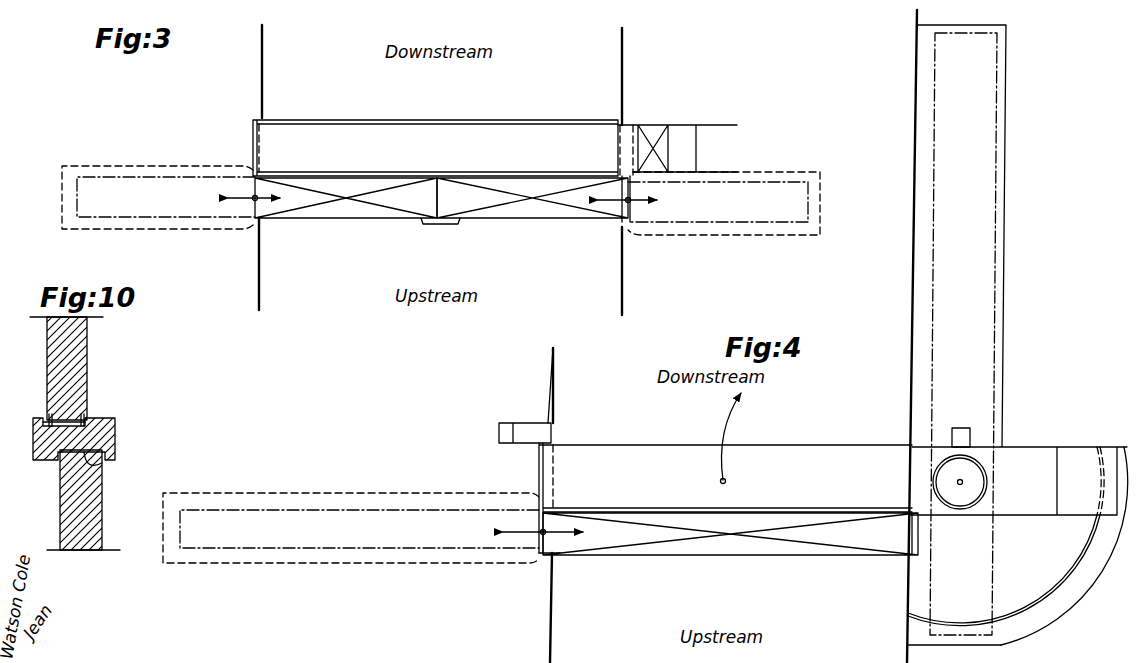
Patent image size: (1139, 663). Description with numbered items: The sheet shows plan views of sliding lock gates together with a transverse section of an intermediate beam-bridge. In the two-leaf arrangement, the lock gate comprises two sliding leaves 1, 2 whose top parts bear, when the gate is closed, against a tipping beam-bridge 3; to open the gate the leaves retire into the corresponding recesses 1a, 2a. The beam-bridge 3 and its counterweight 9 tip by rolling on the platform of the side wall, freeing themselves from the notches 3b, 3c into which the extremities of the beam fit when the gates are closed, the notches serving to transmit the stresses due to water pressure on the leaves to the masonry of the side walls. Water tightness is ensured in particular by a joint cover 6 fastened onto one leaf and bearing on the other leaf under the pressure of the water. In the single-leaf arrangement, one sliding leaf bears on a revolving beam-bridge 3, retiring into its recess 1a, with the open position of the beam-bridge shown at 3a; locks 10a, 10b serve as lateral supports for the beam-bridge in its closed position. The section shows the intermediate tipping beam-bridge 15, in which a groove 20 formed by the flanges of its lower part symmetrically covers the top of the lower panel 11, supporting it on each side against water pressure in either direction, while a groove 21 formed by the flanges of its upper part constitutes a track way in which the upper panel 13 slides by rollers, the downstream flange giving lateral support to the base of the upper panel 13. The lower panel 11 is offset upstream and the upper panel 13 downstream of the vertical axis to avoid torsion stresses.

In FIG. 3, the sliding leaf 1 is at (348, 207).
In FIG. 4, the sliding leaf 1 is at (733, 540).
In FIG. 3, the recess 1a is at (148, 222).
In FIG. 4, the recess 1a is at (370, 556).
In FIG. 3, the sliding leaf 2 is at (540, 212).
In FIG. 3, the recess 2a is at (723, 228).
In FIG. 3, the beam-bridge 3 is at (478, 140).
In FIG. 4, the beam-bridge 3 is at (778, 470).
In FIG. 4, the open position of beam-bridge 3a is at (977, 308).
In FIG. 3, the notch 3b is at (262, 145).
In FIG. 3, the notch 3c is at (627, 137).
In FIG. 3, the joint cover 6 is at (440, 226).
In FIG. 3, the counterweight 9 is at (677, 135).
In FIG. 4, the lock 10a is at (525, 430).
In FIG. 4, the lock 10b is at (963, 440).
In FIG. 10, the lower panel 11 is at (83, 516).
In FIG. 10, the upper panel 13 is at (72, 369).
In FIG. 10, the tipping beam-bridge 15 is at (85, 439).
In FIG. 10, the groove 20 is at (101, 466).
In FIG. 10, the groove 21 is at (86, 411).